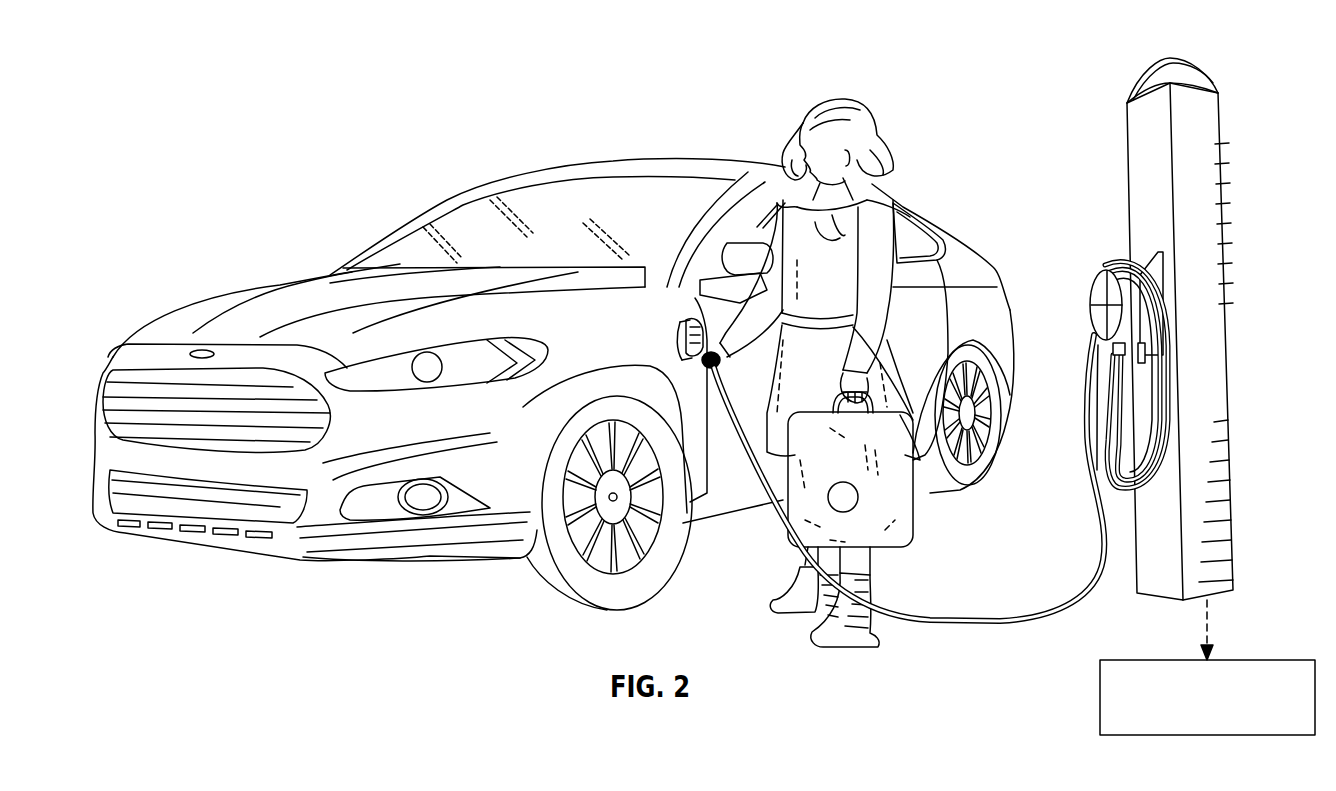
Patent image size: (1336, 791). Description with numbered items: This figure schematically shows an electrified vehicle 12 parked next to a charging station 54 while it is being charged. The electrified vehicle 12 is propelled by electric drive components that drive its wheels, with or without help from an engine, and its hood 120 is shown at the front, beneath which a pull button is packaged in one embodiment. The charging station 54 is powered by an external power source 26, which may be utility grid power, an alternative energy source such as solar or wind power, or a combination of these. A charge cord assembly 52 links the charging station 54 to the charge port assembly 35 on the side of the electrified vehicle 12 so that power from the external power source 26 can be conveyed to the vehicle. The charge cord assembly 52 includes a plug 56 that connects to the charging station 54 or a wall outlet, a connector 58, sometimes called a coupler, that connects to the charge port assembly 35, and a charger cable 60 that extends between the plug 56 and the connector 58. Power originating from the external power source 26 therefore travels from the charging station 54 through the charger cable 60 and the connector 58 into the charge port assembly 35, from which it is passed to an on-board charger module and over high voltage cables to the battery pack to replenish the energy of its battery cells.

The electrified vehicle 12 is at (378, 92).
The hood 120 is at (255, 312).
The connector 58 is at (682, 302).
The charge port assembly 35 is at (678, 330).
The charge cord assembly 52 is at (967, 618).
The charger cable 60 is at (1000, 623).
The charging station 54 is at (1147, 128).
The plug 56 is at (1110, 350).
The external power source 26 is at (1250, 660).